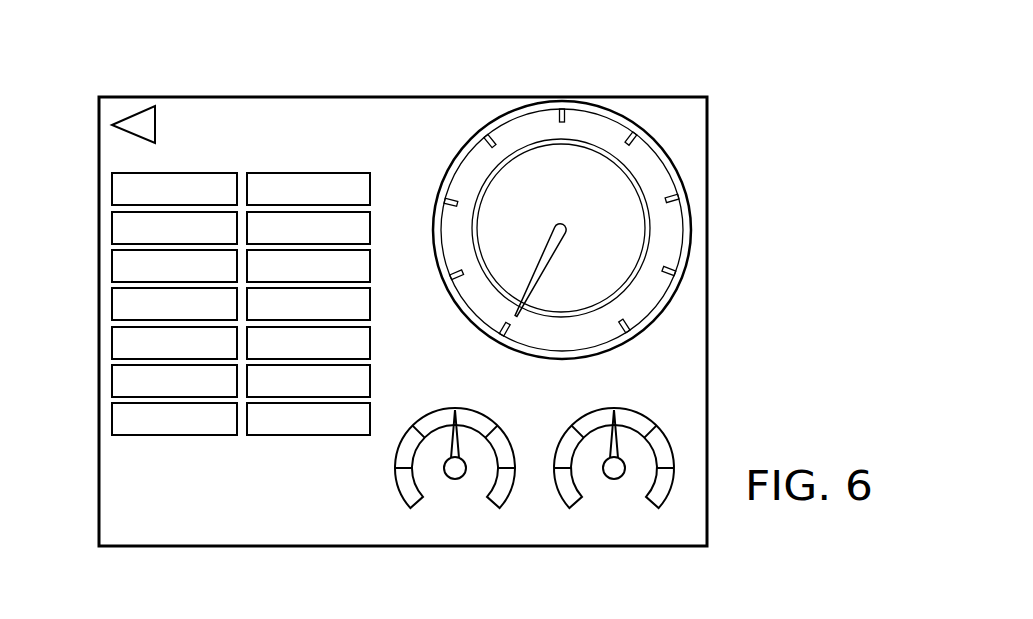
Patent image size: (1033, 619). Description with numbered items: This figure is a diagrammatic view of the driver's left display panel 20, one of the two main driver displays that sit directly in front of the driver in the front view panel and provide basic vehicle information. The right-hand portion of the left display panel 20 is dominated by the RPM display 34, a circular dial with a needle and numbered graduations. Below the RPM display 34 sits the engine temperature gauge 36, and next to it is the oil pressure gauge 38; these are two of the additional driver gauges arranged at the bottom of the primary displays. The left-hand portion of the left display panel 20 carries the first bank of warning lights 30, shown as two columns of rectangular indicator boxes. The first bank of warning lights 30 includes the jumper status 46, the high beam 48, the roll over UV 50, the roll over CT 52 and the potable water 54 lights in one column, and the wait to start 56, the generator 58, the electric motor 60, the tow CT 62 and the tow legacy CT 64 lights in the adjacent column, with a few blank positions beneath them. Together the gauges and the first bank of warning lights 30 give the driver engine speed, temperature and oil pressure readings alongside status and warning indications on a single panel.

The left display panel 20 is at (529, 80).
The first bank of warning lights 30 is at (149, 78).
The RPM display 34 is at (673, 228).
The engine temperature gauge 36 is at (505, 488).
The oil pressure gauge 38 is at (663, 488).
The jumper status 46 is at (112, 186).
The high beam 48 is at (112, 224).
The roll over UV 50 is at (112, 262).
The roll over CT 52 is at (112, 300).
The potable water 54 is at (112, 338).
The wait to start 56 is at (320, 176).
The generator 58 is at (362, 227).
The electric motor 60 is at (360, 263).
The tow CT 62 is at (360, 302).
The tow legacy CT 64 is at (363, 345).